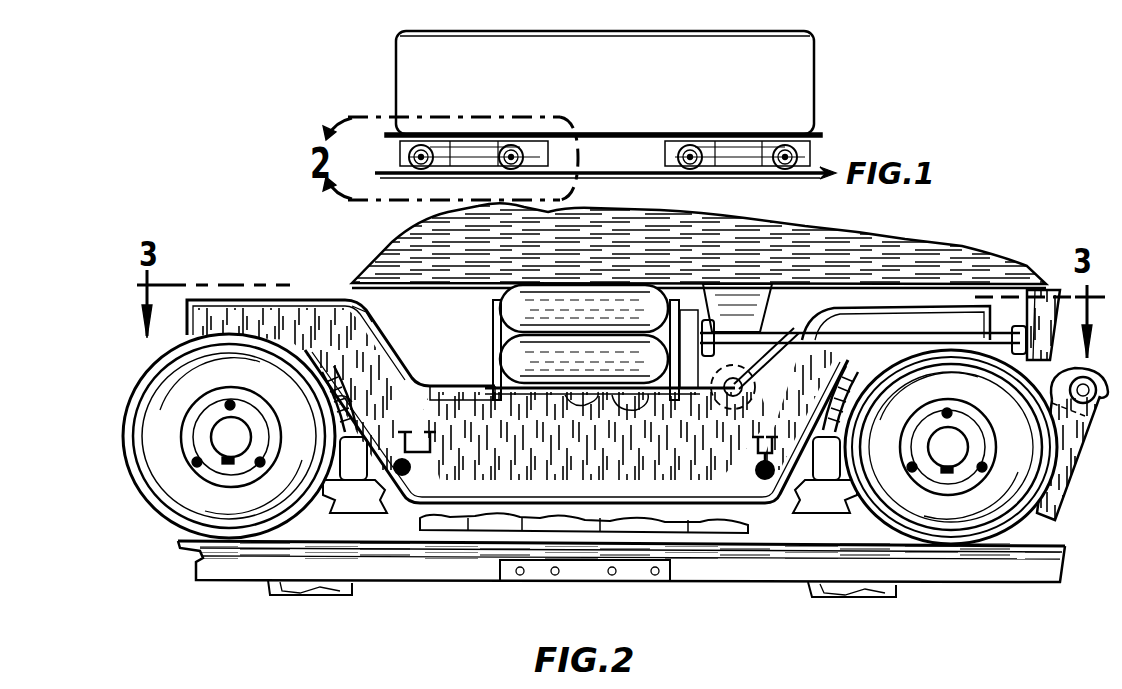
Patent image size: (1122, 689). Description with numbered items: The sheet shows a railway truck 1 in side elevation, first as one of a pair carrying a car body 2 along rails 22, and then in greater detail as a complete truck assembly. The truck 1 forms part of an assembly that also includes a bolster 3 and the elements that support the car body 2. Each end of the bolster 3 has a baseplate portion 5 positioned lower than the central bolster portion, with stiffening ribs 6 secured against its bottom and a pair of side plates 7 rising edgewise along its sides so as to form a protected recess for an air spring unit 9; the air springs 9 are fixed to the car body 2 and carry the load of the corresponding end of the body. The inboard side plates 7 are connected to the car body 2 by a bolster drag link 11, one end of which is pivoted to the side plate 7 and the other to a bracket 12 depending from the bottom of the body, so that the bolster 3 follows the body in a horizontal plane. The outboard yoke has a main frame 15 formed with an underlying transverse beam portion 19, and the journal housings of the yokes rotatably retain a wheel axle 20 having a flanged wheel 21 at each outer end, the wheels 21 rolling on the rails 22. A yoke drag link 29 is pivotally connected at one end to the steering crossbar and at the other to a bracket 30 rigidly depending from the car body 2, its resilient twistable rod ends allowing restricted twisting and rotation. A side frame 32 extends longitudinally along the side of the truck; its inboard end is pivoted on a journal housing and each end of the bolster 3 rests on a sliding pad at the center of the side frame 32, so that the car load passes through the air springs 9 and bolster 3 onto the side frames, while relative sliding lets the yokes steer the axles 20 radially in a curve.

In FIG. 1, the railway truck 1 is at (398, 152).
In FIG. 2, the railway truck 1 is at (318, 282).
In FIG. 1, the car body 2 is at (763, 43).
In FIG. 2, the car body 2 is at (905, 252).
In FIG. 2, the bolster 3 is at (576, 368).
In FIG. 2, the baseplate portion 5 is at (552, 398).
In FIG. 2, the stiffening ribs 6 is at (590, 410).
In FIG. 2, the side plates 7 is at (498, 323).
In FIG. 2, the air spring unit 9 is at (498, 351).
In FIG. 2, the bolster drag link 11 is at (812, 325).
In FIG. 2, the bracket 12 is at (1058, 332).
In FIG. 2, the main frame 15 is at (351, 407).
In FIG. 2, the transverse beam portion 19 is at (349, 492).
In FIG. 2, the wheel axle 20 is at (226, 430).
In FIG. 2, the flanged wheel 21 is at (580, 439).
In FIG. 1, the rails 22 is at (605, 176).
In FIG. 2, the rails 22 is at (692, 587).
In FIG. 2, the yoke drag link 29 is at (700, 408).
In FIG. 2, the bracket 30 is at (725, 404).
In FIG. 2, the side frame 32 is at (384, 318).